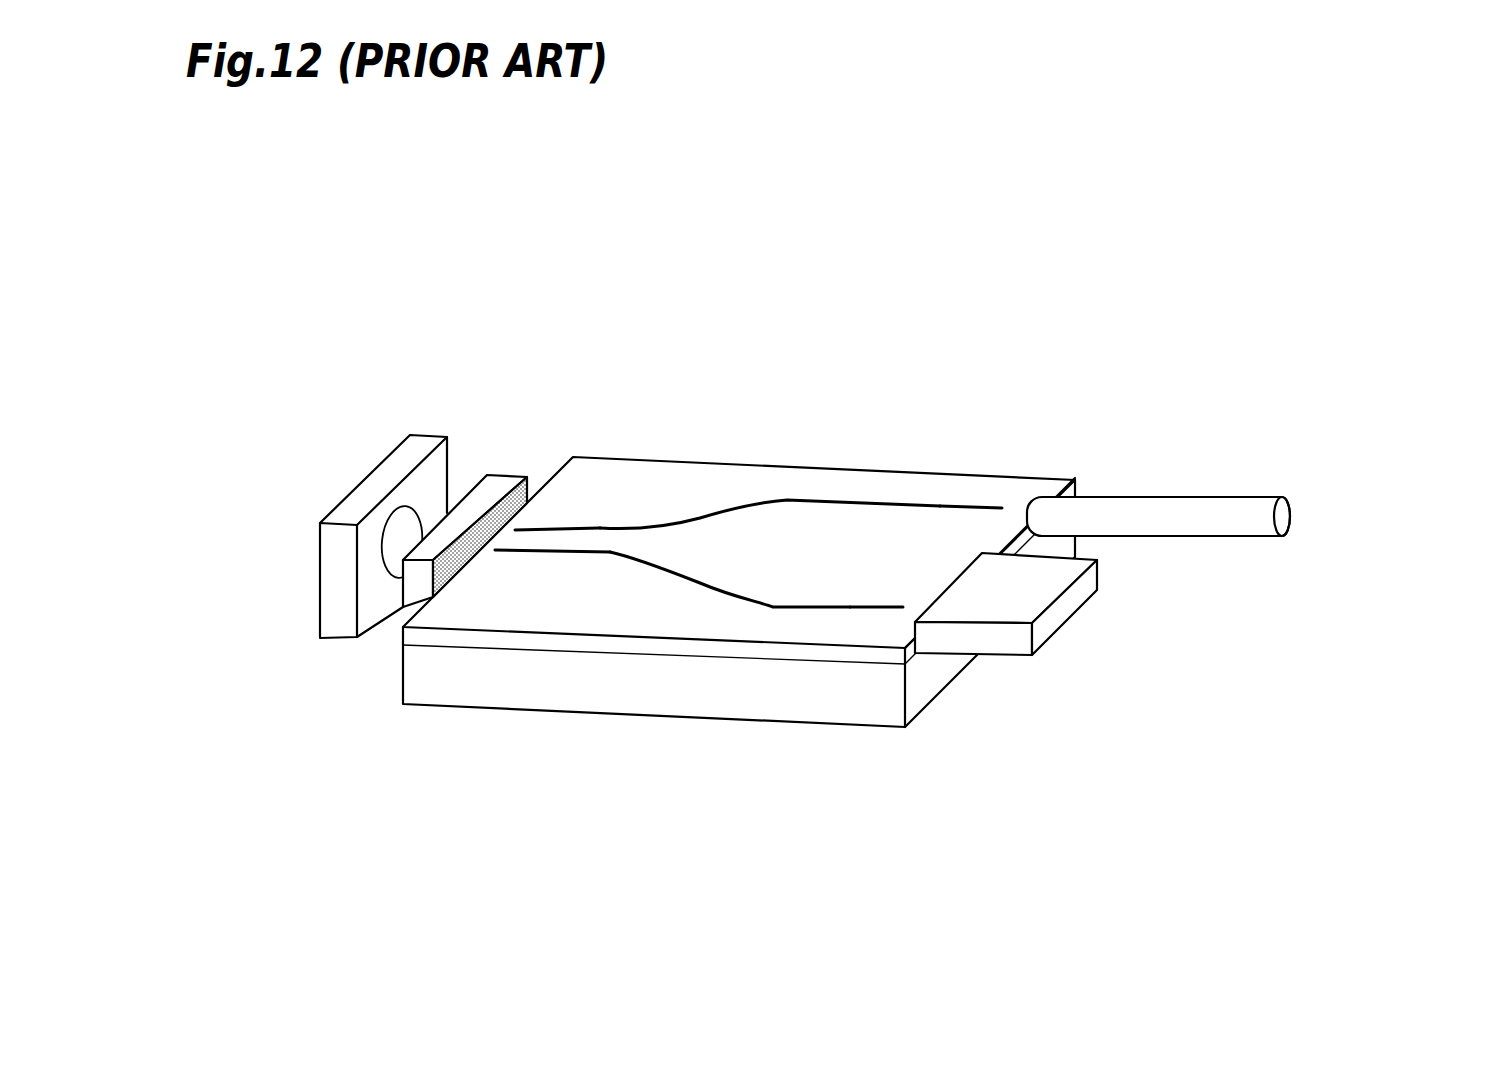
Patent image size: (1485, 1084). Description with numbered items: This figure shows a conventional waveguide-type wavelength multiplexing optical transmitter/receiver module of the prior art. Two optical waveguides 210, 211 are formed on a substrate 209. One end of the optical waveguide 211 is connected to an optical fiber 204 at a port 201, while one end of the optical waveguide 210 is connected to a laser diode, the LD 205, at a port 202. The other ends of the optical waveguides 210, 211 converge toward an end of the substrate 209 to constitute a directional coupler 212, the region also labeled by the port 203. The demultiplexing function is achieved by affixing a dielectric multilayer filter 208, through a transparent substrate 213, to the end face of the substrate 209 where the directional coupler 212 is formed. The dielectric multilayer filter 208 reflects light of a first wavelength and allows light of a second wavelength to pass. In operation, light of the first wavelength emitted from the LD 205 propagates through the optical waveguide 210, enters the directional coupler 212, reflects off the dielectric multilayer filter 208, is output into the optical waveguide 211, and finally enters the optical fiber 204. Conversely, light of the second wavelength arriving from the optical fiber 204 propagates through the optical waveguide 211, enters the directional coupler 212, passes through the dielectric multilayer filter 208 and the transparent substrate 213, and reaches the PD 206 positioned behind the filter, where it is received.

The port 201 is at (1001, 509).
The port 202 is at (848, 605).
The port 203 is at (603, 528).
The optical fiber 204 is at (1237, 512).
The LD (laser diode) 205 is at (1073, 602).
The PD (photodiode) 206 is at (377, 487).
The dielectric multilayer filter 208 is at (502, 492).
The substrate 209 is at (448, 682).
The optical waveguide 210 is at (760, 603).
The optical waveguide 211 is at (925, 505).
The directional coupler 212 is at (557, 547).
The transparent substrate 213 is at (477, 497).